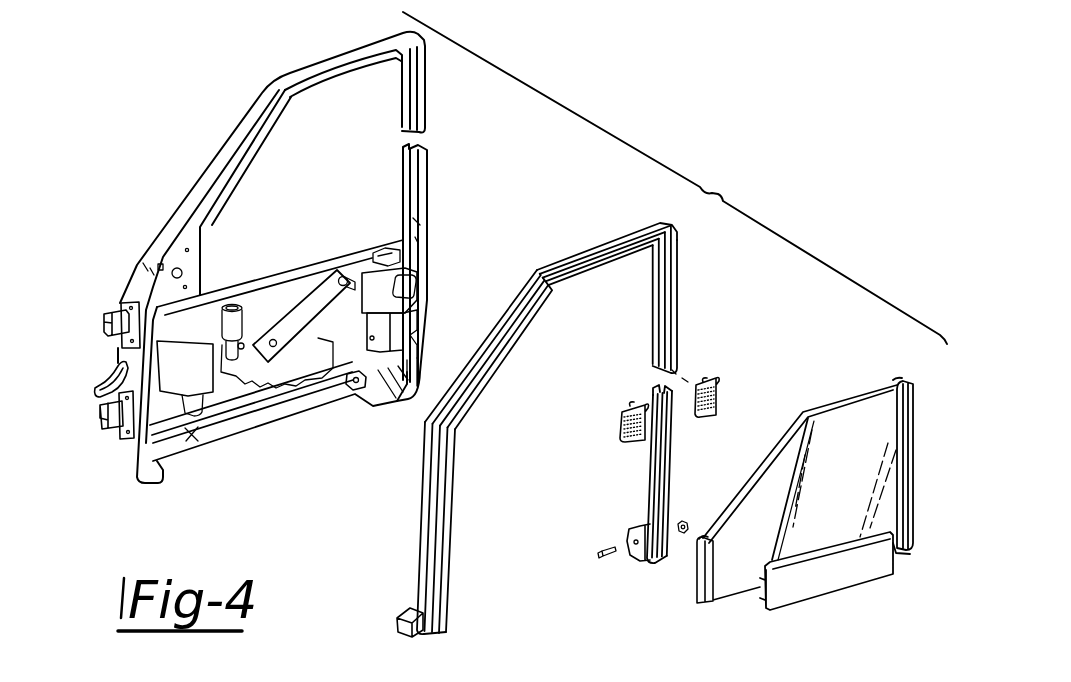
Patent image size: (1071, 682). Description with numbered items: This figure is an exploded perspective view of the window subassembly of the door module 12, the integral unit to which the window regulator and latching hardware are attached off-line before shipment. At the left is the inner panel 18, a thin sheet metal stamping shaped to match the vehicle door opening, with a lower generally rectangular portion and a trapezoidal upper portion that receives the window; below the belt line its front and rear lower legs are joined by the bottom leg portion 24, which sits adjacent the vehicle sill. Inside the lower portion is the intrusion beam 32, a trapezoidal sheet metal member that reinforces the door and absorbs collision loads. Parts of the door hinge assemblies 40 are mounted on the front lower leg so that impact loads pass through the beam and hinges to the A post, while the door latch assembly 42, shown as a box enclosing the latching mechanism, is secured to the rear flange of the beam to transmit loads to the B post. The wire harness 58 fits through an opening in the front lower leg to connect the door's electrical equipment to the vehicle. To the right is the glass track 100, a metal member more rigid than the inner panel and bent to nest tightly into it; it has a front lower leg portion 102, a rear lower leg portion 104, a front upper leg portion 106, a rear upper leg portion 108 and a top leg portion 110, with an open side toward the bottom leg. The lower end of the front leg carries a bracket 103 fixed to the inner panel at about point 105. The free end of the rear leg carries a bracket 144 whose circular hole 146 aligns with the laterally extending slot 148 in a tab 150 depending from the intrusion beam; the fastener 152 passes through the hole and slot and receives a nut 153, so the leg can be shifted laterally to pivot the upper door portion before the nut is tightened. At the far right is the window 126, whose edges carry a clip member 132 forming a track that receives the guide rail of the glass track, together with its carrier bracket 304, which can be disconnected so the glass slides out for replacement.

The door module 12 is at (675, 178).
The inner panel 18 is at (431, 164).
The bottom leg portion 24 is at (293, 402).
The intrusion beam 32 is at (215, 386).
The door hinge assemblies 40 is at (110, 420).
The door latch assembly 42 is at (396, 332).
The wire harness 58 is at (110, 377).
The glass track 100 is at (599, 316).
The front lower leg portion 102 is at (403, 529).
The bracket 103 is at (398, 615).
The rear lower leg portion 104 is at (674, 504).
The point 105 is at (186, 445).
The front upper leg portion 106 is at (474, 346).
The rear upper leg portion 108 is at (690, 312).
The top leg portion 110 is at (584, 250).
The window 126 is at (805, 500).
The clip member 132 is at (907, 550).
The bracket 144 is at (633, 562).
The circular hole 146 is at (630, 535).
The slot 148 is at (345, 392).
The tab 150 is at (358, 392).
The fastener 152 is at (604, 562).
The nut 153 is at (684, 520).
The carrier bracket 304 is at (808, 588).